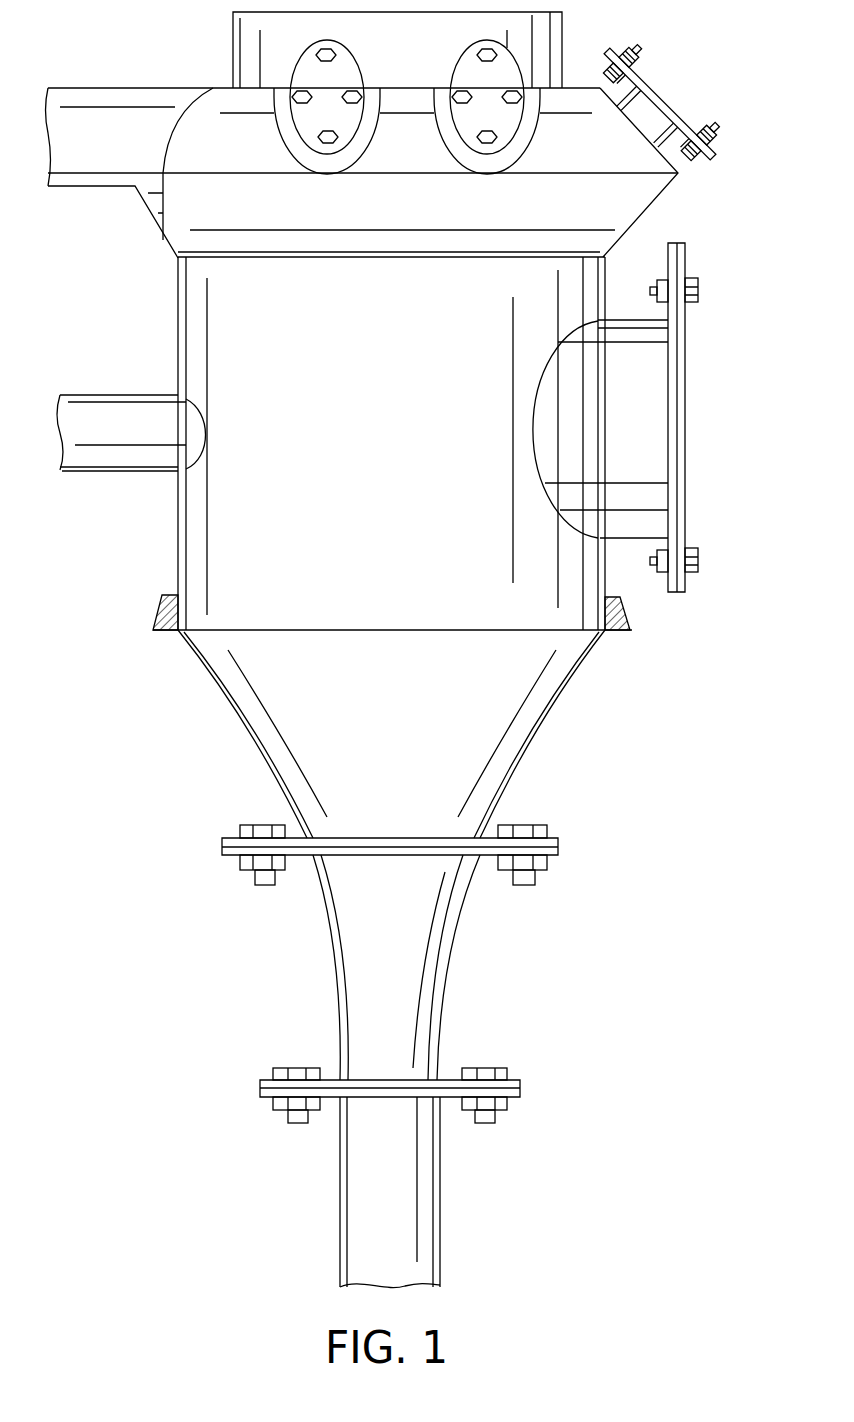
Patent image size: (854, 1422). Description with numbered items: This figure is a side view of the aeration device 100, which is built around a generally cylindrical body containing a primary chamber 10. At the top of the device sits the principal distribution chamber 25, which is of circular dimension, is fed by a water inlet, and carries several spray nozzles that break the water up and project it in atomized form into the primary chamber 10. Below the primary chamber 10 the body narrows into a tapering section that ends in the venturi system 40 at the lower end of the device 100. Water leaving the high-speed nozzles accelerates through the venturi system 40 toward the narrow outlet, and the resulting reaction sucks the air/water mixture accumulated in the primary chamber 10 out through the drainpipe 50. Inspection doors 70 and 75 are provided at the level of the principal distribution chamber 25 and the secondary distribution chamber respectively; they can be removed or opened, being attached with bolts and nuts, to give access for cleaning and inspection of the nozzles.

The aeration device 100 is at (648, 698).
The primary chamber 10 is at (393, 448).
The principal distribution chamber 25 is at (640, 201).
The venturi system 40 is at (440, 978).
The drainpipe 50 is at (400, 1208).
The inspection door 70 is at (667, 104).
The inspection door 75 is at (672, 393).